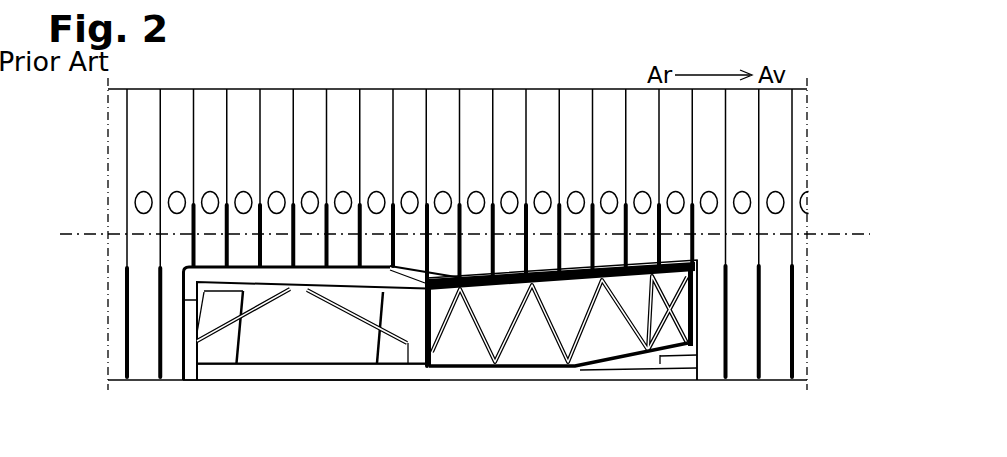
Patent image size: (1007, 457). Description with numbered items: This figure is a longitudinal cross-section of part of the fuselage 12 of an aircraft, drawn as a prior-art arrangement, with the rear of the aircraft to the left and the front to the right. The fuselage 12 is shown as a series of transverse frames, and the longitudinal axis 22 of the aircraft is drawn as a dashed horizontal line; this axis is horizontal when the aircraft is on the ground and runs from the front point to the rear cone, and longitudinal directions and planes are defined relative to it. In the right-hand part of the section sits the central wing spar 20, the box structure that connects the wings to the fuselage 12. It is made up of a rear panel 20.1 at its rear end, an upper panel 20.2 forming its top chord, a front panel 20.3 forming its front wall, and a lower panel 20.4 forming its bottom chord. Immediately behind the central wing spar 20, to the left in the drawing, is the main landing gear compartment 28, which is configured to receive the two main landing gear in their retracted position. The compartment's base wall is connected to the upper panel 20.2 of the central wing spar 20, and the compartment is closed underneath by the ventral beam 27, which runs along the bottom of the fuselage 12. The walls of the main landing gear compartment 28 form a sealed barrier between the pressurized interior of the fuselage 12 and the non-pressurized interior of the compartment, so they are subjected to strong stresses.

The fuselage 12 is at (508, 126).
The longitudinal axis 22 is at (85, 233).
The ventral beam 27 is at (209, 374).
The main landing gear compartment 28 is at (300, 324).
The central wing spar 20 is at (626, 326).
The rear panel 20.1 is at (425, 318).
The upper panel 20.2 is at (607, 263).
The front panel 20.3 is at (697, 317).
The lower panel 20.4 is at (540, 368).